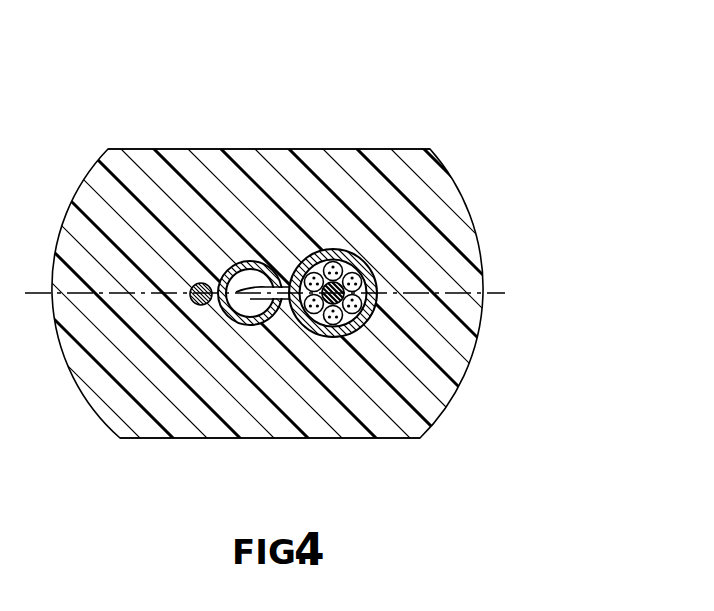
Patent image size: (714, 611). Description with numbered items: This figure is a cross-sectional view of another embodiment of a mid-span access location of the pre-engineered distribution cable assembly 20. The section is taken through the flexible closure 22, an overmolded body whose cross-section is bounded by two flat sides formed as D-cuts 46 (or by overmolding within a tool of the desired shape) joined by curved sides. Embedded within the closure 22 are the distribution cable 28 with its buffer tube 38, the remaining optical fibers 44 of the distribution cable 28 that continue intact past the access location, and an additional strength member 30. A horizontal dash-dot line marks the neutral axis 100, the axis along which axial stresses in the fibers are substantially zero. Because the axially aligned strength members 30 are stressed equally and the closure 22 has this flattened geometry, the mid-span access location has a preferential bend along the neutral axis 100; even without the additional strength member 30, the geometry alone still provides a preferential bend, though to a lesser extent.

The pre-engineered distribution cable assembly 20 is at (357, 252).
The flexible closure 22 is at (430, 400).
The distribution cable 28 is at (343, 253).
The strength member 30 is at (200, 283).
The buffer tube 38 is at (250, 261).
The remaining optical fibers 44 is at (333, 337).
The D-cuts 46 is at (135, 147).
The neutral axis 100 is at (497, 296).